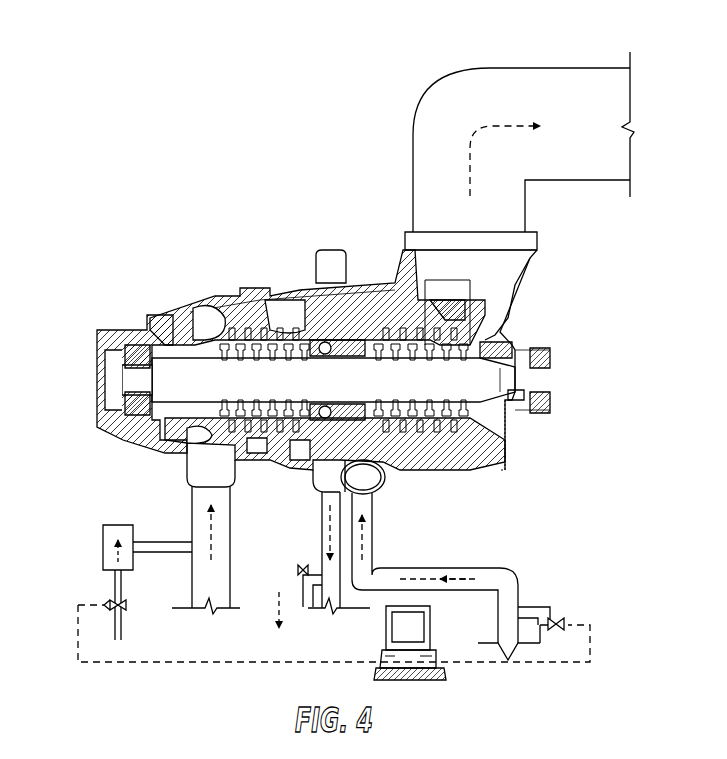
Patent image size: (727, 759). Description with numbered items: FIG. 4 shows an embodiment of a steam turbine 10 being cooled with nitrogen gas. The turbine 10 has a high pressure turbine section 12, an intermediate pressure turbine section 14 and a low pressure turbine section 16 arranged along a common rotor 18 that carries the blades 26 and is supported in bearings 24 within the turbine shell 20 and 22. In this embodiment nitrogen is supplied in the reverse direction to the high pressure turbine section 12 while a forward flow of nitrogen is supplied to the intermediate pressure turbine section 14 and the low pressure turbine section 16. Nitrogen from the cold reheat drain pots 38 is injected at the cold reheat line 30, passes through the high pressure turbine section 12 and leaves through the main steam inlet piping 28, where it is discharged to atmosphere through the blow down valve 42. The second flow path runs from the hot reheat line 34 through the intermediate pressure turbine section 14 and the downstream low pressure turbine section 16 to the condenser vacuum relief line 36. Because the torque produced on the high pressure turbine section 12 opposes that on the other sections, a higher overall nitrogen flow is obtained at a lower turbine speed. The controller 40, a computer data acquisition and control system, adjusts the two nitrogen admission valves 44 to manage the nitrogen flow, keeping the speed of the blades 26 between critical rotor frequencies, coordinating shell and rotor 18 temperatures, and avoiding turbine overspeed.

The steam turbine 10 is at (108, 176).
The high pressure turbine section 12 is at (247, 372).
The intermediate pressure turbine section 14 is at (420, 370).
The low pressure turbine section 16 is at (503, 398).
The rotor 18 is at (500, 372).
The turbine shell 20 is at (186, 318).
The turbine shell 22 is at (302, 312).
The bearings 24 is at (138, 352).
The blades 26 is at (486, 354).
The main steam inlet piping 28 is at (322, 522).
The cold reheat line 30 is at (200, 514).
The hot reheat line 34 is at (498, 576).
The condenser vacuum relief line 36 is at (542, 86).
The cold reheat drain pots 38 is at (103, 547).
The controller 40 is at (386, 627).
The blow down valve 42 is at (300, 566).
The nitrogen admission valves 44 is at (110, 604).